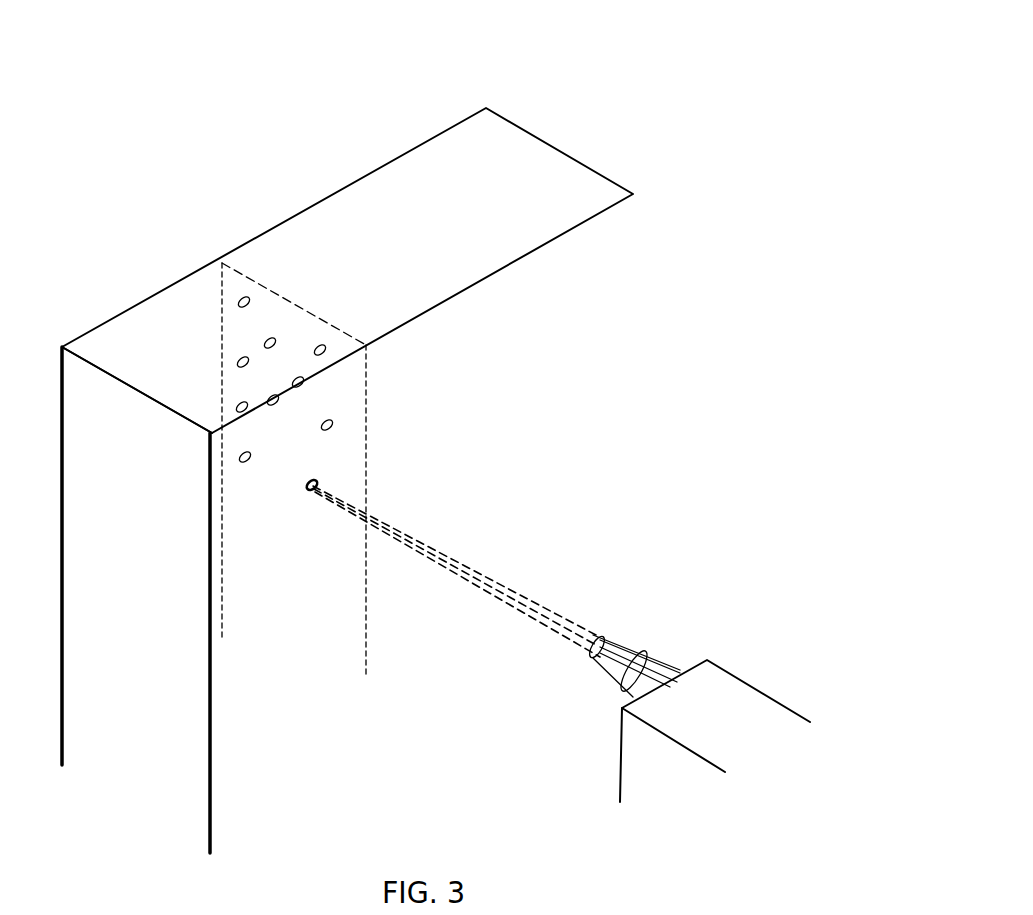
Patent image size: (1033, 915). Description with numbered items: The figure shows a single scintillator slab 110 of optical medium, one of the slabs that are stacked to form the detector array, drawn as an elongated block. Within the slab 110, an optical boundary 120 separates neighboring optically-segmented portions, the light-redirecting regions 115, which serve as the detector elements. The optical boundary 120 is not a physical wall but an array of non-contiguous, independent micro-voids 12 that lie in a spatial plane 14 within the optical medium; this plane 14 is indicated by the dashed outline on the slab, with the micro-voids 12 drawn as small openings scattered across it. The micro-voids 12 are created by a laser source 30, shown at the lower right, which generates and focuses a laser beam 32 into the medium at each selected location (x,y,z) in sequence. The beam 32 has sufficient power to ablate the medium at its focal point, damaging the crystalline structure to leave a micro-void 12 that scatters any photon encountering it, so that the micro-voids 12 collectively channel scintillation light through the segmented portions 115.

The slab 110 is at (592, 122).
The light-redirecting region 115 is at (156, 320).
The optical boundary 120 is at (288, 312).
The spatial plane 14 is at (378, 394).
The micro-void 12 is at (245, 295).
The laser beam 32 is at (500, 602).
The laser source 30 is at (731, 692).